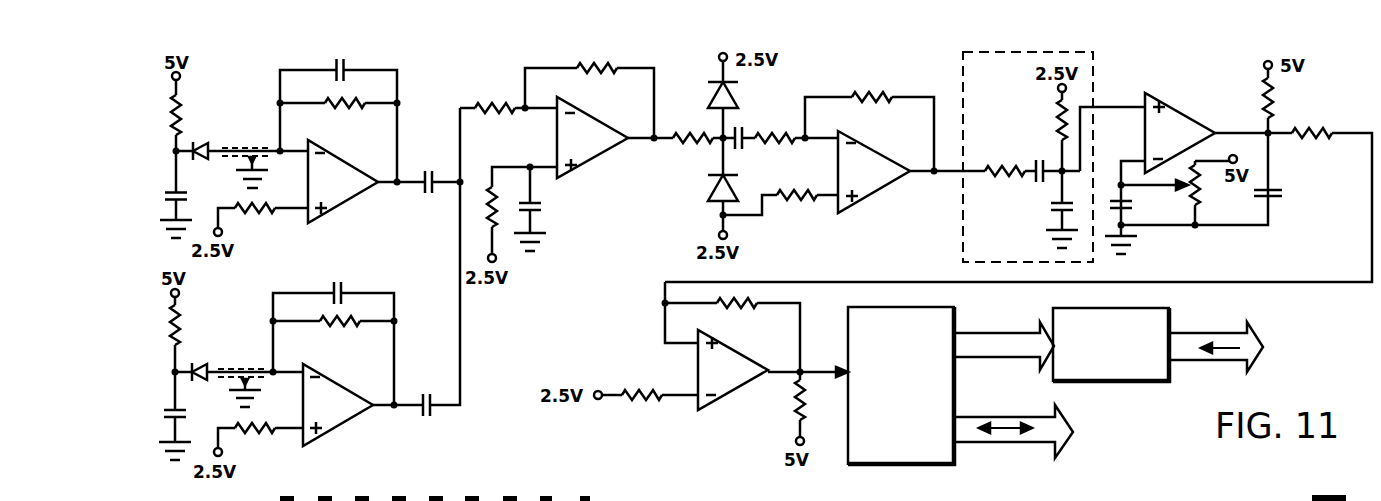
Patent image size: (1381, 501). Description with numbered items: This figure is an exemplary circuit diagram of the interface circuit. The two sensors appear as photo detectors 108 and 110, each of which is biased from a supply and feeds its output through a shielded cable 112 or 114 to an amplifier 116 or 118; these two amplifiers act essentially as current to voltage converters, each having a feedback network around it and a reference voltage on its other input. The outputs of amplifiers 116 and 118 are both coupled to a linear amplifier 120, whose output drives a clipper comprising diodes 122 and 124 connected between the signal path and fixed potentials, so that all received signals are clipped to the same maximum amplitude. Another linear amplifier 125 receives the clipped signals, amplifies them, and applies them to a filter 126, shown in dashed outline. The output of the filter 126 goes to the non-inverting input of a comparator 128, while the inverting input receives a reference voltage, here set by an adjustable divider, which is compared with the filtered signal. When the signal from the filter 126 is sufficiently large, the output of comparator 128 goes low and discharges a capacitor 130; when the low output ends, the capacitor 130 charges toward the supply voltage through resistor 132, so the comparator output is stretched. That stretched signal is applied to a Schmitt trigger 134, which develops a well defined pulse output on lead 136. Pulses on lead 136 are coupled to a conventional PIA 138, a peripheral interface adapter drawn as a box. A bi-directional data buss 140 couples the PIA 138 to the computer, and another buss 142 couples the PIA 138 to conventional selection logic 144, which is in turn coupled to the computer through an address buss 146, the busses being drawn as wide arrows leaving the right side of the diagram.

The photo detector 108 is at (199, 141).
The photo detector 110 is at (198, 362).
The shielded cable 112 is at (244, 148).
The shielded cable 114 is at (241, 369).
The amplifier 116 is at (334, 158).
The amplifier 118 is at (331, 380).
The linear amplifier 120 is at (607, 152).
The diode 122 is at (740, 95).
The diode 124 is at (707, 190).
The linear amplifier 125 is at (867, 190).
The filter 126 is at (1094, 58).
The comparator 128 is at (1183, 110).
The capacitor 130 is at (1274, 197).
The resistor 132 is at (1276, 100).
The Schmitt trigger 134 is at (725, 394).
The lead 136 is at (828, 370).
The PIA 138 is at (908, 467).
The bi-directional data buss 140 is at (1018, 447).
The buss 142 is at (1014, 331).
The selection logic 144 is at (1138, 383).
The address buss 146 is at (1226, 331).